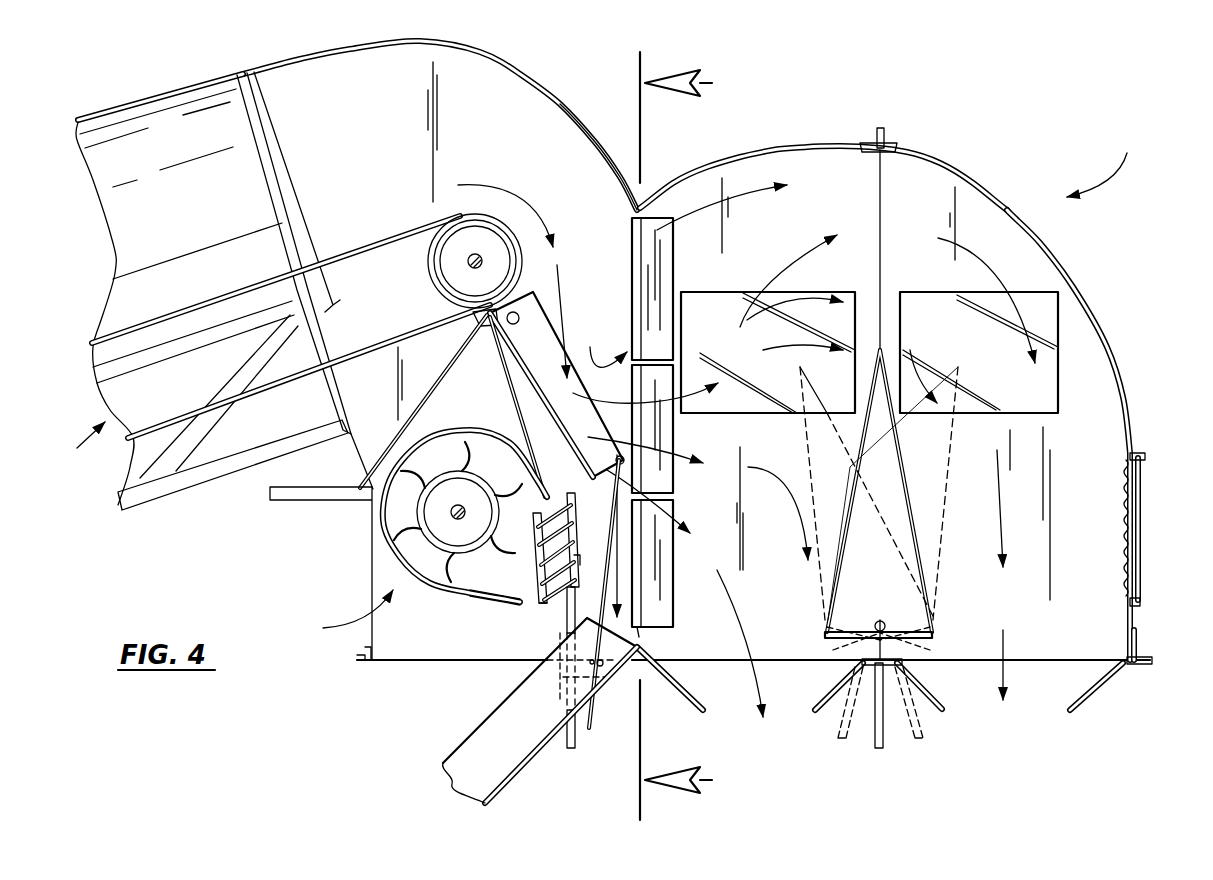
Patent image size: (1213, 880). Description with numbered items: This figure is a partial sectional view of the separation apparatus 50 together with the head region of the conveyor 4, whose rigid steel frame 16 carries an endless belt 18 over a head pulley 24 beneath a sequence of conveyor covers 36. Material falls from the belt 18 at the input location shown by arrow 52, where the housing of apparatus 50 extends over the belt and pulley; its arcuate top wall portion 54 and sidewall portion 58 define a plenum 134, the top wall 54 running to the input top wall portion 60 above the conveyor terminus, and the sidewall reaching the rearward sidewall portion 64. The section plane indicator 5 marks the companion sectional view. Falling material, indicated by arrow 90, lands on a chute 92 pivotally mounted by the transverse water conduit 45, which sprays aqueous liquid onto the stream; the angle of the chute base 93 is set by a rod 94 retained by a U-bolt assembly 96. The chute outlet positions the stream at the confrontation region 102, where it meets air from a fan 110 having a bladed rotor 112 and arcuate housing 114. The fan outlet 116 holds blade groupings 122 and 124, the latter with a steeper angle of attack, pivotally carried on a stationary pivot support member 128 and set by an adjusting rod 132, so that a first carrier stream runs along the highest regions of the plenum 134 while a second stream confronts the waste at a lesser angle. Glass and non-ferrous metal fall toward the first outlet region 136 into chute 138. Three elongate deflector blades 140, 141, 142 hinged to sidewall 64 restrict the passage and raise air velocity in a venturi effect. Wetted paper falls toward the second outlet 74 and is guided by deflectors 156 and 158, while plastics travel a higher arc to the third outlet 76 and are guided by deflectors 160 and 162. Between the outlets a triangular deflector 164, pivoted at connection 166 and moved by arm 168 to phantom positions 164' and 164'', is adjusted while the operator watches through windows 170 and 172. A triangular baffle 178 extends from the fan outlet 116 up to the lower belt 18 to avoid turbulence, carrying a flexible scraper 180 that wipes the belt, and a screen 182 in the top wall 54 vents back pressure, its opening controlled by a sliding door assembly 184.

The conveyor 4 is at (81, 440).
The section line 5- 5 is at (663, 436).
The frame 16 is at (200, 490).
The belt 18 is at (352, 243).
The head pulley 24 is at (428, 276).
The conveyor covers 36 is at (143, 92).
The transverse water conduit 45 is at (520, 310).
The separation apparatus 50 is at (1097, 168).
The input location arrow 52 is at (523, 198).
The top wall portion 54 is at (972, 177).
The sidewall portion 58 is at (1115, 387).
The input top wall portion 60 is at (503, 66).
The rearward sidewall portion 64 is at (570, 138).
The second outlet 74 is at (806, 699).
The third outlet 76 is at (1054, 696).
The arrow 90 is at (562, 307).
The chute 92 is at (592, 372).
The base 93 is at (560, 414).
The rod 94 is at (598, 722).
The U-bolt assembly 96 is at (605, 672).
The confrontation region 102 is at (616, 540).
The fan 110 is at (710, 573).
The bladed rotor 112 is at (450, 545).
The arcuate housing 114 is at (455, 436).
The fan outlet 116 is at (522, 595).
The blade grouping 122 is at (596, 556).
The blade grouping 124 is at (574, 505).
The stationary pivot support member 128 is at (545, 605).
The adjusting rod 132 is at (578, 747).
The plenum 134 is at (868, 272).
The first outlet region 136 is at (562, 665).
The chute 138 is at (500, 802).
The deflector blade 140 is at (658, 228).
The deflector blade 141 is at (668, 442).
The deflector blade 142 is at (668, 611).
The deflector 156 is at (700, 714).
The deflector 158 is at (822, 718).
The deflector 160 is at (940, 716).
The deflector 162 is at (1095, 695).
The deflector 164 is at (870, 494).
The deflector phantom position 164' is at (845, 493).
The deflector phantom position 164'' is at (925, 493).
The pivotal connection 166 is at (882, 620).
The arm 168 is at (882, 750).
The window 170 is at (718, 292).
The window 172 is at (932, 292).
The baffle 178 is at (512, 380).
The flexible scraper 180 is at (478, 325).
The screen 182 is at (1126, 522).
The sliding door assembly 184 is at (1145, 524).